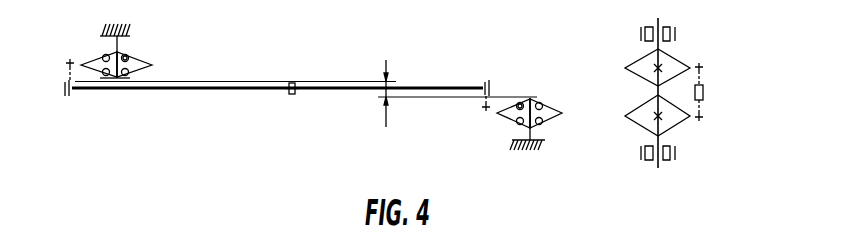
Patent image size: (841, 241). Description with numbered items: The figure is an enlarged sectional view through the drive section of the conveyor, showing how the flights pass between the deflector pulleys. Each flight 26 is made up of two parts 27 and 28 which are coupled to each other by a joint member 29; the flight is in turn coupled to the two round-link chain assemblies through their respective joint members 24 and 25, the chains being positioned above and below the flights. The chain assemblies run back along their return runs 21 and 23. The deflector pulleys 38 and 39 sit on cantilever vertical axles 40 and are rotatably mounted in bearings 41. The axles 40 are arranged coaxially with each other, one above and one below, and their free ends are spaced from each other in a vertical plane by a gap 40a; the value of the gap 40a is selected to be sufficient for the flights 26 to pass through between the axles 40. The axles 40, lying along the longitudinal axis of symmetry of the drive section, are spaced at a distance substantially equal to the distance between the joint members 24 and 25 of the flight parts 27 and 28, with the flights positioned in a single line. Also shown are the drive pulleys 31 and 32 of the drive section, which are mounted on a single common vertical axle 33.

The return run 21 is at (67, 63).
The return run 23 is at (482, 108).
The joint member 24 is at (67, 98).
The joint member 25 is at (485, 80).
The flight 26 is at (242, 101).
The flight part 27 is at (142, 91).
The flight part 28 is at (328, 92).
The joint member 29 is at (290, 94).
The drive pulley 31 is at (638, 70).
The drive pulley 32 is at (639, 117).
The common axle 33 is at (658, 138).
The deflector pulley 38 is at (135, 67).
The deflector pulley 39 is at (549, 110).
The cantilever vertical axle 40 is at (115, 40).
The gap 40a is at (385, 80).
The bearing 41 is at (126, 56).